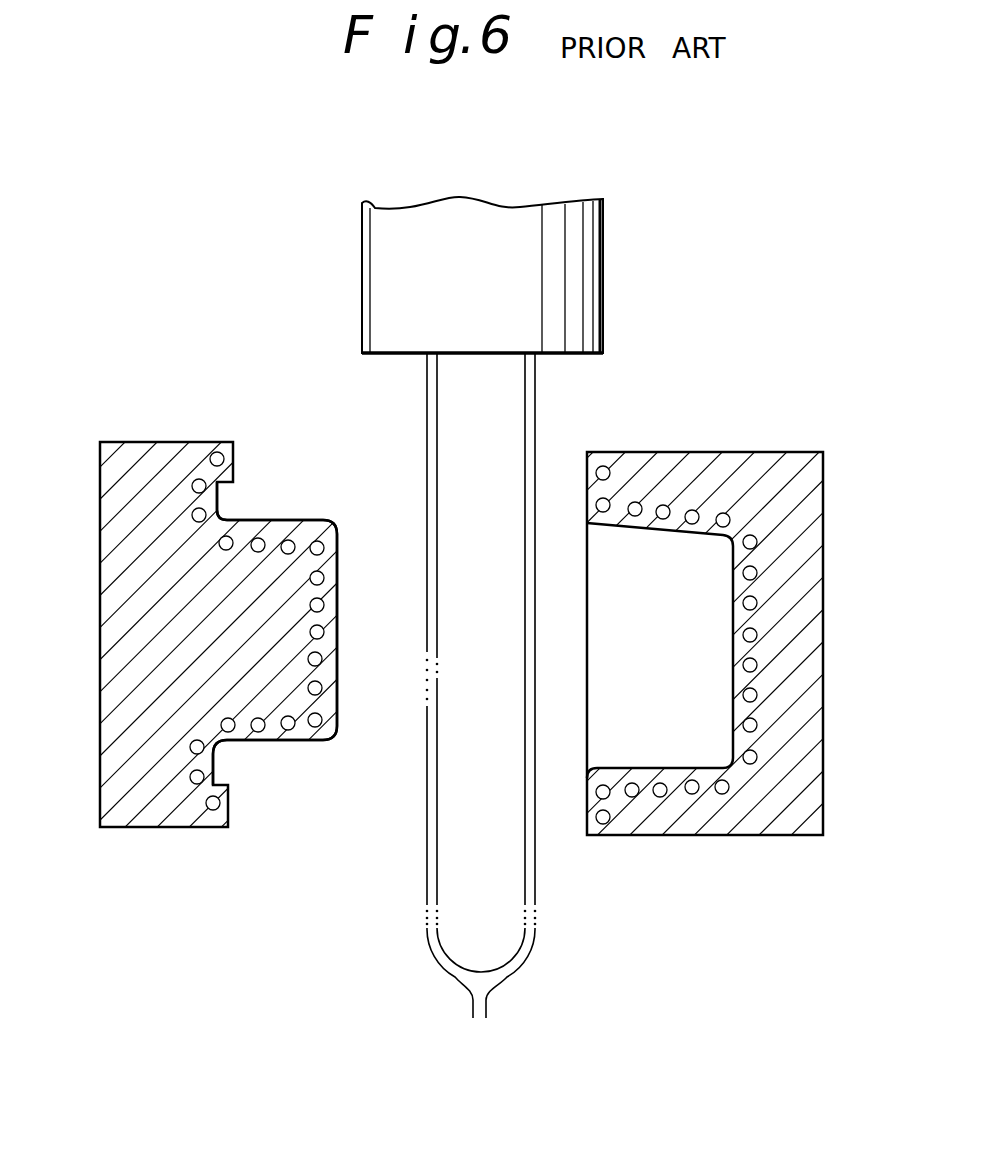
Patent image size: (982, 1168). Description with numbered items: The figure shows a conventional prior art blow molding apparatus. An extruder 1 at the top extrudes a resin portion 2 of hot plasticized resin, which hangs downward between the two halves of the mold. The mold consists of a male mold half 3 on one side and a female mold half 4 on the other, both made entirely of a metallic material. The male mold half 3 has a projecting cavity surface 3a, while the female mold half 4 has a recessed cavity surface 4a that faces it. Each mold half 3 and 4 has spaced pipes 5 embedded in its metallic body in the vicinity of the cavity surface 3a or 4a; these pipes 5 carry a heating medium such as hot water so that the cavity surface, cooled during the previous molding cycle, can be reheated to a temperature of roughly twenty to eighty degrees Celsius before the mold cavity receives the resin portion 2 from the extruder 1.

The extruder 1 is at (380, 240).
The resin portion 2 is at (520, 965).
The male mold half 3 is at (168, 832).
The cavity surface 3a is at (308, 530).
The female mold half 4 is at (759, 845).
The cavity surface 4a is at (733, 652).
The pipes 5 is at (225, 452).